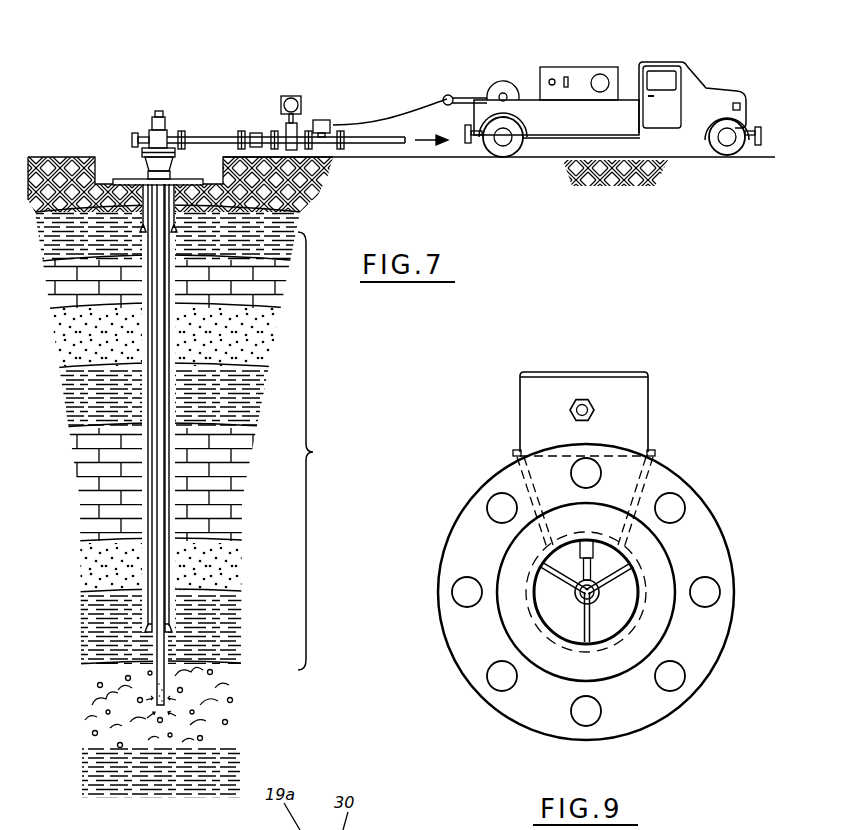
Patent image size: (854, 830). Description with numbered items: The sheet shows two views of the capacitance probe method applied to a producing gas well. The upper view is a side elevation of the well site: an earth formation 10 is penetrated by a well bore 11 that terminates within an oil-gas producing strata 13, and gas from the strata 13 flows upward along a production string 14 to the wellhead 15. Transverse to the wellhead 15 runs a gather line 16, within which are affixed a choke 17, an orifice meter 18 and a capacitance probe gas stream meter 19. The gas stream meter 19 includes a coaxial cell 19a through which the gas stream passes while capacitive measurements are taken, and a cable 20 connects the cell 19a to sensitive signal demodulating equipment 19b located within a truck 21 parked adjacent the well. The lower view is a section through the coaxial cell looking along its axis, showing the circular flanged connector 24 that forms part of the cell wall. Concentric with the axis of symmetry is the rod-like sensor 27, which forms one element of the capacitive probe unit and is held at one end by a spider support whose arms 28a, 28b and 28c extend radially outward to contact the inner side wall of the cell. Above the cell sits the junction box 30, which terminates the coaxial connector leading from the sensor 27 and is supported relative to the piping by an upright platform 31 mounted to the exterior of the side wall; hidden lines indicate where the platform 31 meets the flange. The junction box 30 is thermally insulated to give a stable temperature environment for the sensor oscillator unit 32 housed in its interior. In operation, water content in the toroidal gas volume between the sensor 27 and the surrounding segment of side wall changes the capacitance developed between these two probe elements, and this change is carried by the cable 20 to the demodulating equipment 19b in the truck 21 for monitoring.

In FIG. 7, the earth formation 10 is at (186, 505).
In FIG. 7, the well bore 11 is at (168, 504).
In FIG. 7, the oil-gas producing strata 13 is at (230, 700).
In FIG. 7, the production string 14 is at (160, 571).
In FIG. 7, the wellhead 15 is at (146, 137).
In FIG. 7, the gather line 16 is at (207, 144).
In FIG. 7, the choke 17 is at (254, 132).
In FIG. 7, the orifice meter 18 is at (286, 125).
In FIG. 7, the capacitance probe gas stream meter 19 is at (360, 62).
In FIG. 7, the coaxial cell 19a is at (321, 120).
In FIG. 7, the signal demodulating equipment 19b is at (585, 67).
In FIG. 7, the cable 20 is at (410, 110).
In FIG. 7, the truck 21 is at (717, 88).
In FIG. 9, the flanged connector 24 is at (722, 535).
In FIG. 9, the rod-like sensor 27 is at (583, 597).
In FIG. 9, the arm of spider support 28a is at (590, 622).
In FIG. 9, the arm of spider support 28b is at (615, 578).
In FIG. 9, the arm of spider support 28c is at (560, 583).
In FIG. 9, the junction box 30 is at (585, 371).
In FIG. 9, the upright platform 31 is at (653, 482).
In FIG. 7, the sensor oscillator unit 32 is at (386, 829).